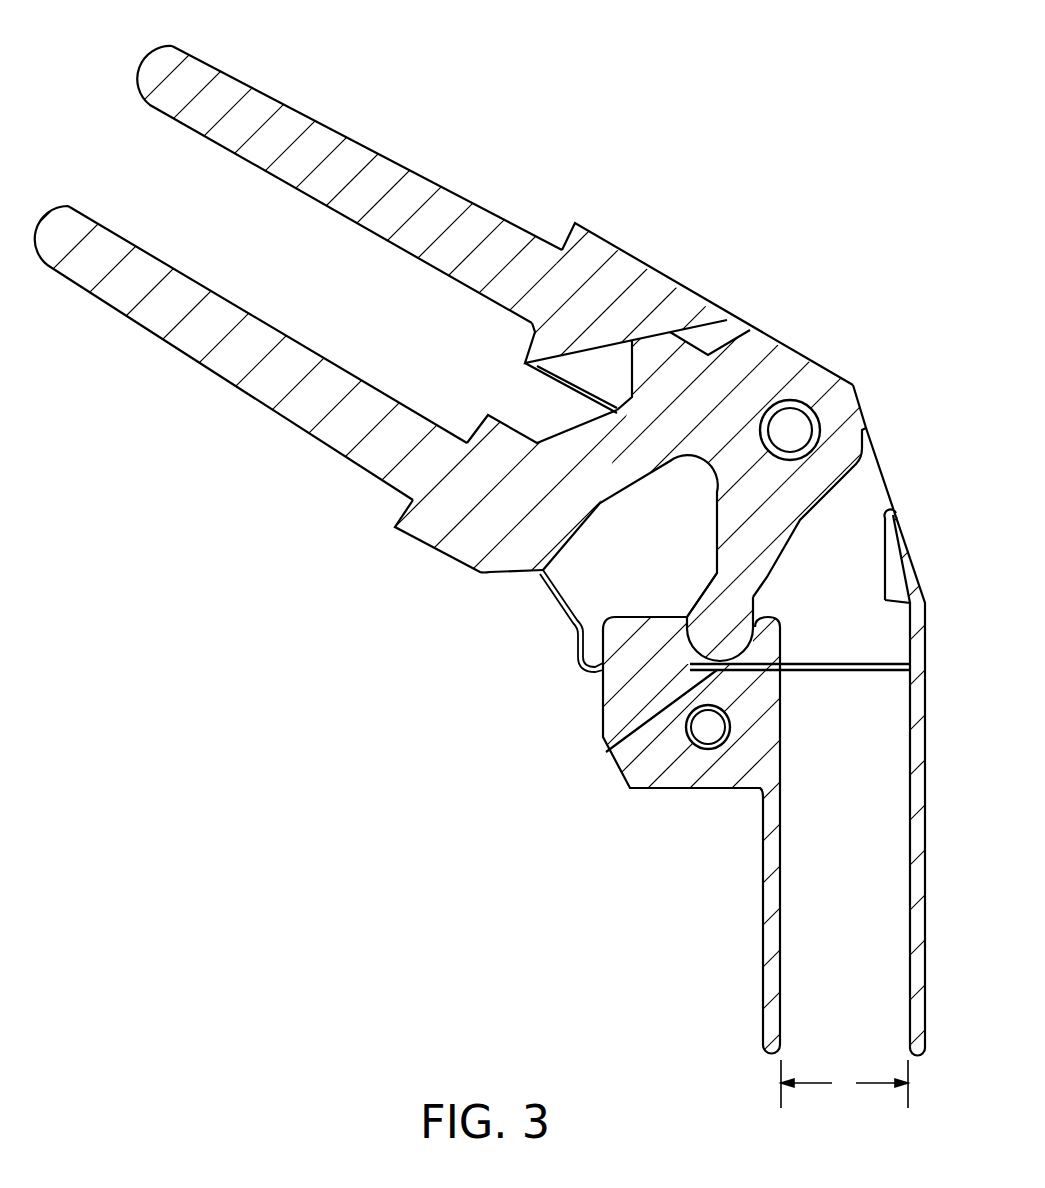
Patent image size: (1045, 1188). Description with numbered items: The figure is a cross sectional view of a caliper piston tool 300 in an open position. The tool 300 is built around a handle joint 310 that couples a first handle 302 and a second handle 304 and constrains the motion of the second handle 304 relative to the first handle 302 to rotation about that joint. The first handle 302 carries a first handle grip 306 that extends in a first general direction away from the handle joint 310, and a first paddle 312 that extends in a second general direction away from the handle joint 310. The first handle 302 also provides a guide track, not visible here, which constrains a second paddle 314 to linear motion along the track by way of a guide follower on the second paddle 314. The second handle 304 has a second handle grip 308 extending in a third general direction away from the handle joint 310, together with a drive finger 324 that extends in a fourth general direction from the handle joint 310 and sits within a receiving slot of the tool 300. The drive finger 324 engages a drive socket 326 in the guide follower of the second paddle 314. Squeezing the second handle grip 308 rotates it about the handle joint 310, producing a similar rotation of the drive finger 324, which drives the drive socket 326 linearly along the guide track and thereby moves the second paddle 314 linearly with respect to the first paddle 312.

The caliper piston tool 300 is at (628, 112).
The first handle 302 is at (608, 241).
The second handle 304 is at (396, 529).
The first handle grip 306 is at (361, 144).
The second handle grip 308 is at (223, 379).
The handle joint 310 is at (736, 479).
The first paddle 312 is at (910, 980).
The second paddle 314 is at (762, 982).
The drive finger 324 is at (692, 610).
The drive socket 326 is at (606, 750).